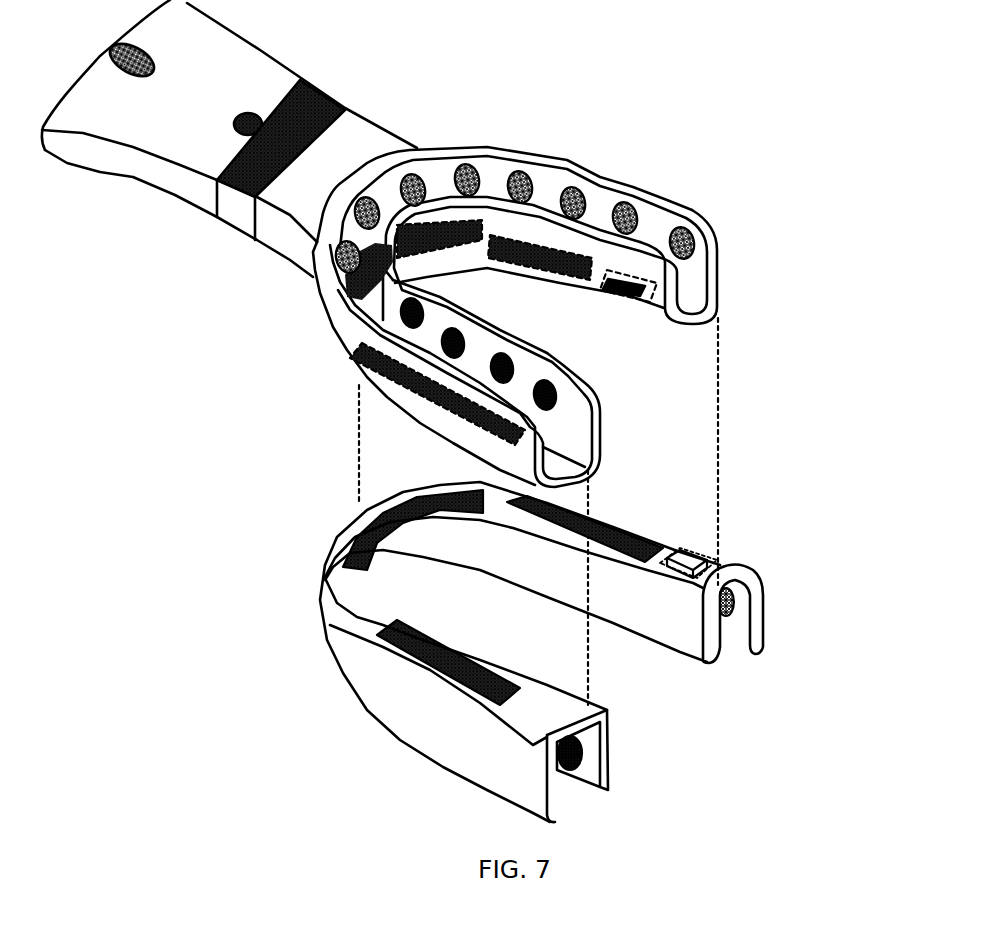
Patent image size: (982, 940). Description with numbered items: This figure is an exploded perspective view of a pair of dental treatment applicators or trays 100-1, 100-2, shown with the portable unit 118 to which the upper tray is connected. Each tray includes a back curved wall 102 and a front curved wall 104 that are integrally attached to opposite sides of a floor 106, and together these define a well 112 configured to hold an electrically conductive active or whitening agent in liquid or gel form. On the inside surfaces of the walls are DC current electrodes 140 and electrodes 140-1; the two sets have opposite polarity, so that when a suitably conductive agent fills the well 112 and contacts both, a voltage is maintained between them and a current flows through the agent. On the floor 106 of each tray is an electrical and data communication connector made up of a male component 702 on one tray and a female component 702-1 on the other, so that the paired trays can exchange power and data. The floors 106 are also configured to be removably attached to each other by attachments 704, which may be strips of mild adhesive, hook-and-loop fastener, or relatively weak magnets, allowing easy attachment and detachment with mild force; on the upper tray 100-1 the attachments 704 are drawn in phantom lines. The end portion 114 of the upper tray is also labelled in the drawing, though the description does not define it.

The portable unit 118 is at (218, 62).
The dental treatment applicator or tray 100-1 is at (492, 140).
The front curved wall 104 is at (443, 181).
The well 112 is at (500, 180).
The electrodes 140-1 is at (682, 230).
The end portion of tray 114 is at (711, 222).
The floor 106 is at (686, 290).
The back curved wall 102 is at (437, 350).
The attachments 704 is at (590, 260).
The female component of electrical and data communication connector 702-1 is at (620, 290).
The DC current electrodes 140 is at (545, 382).
The dental treatment applicator or tray 100-2 is at (315, 515).
The male component of electrical and data communication connector 702 is at (688, 550).